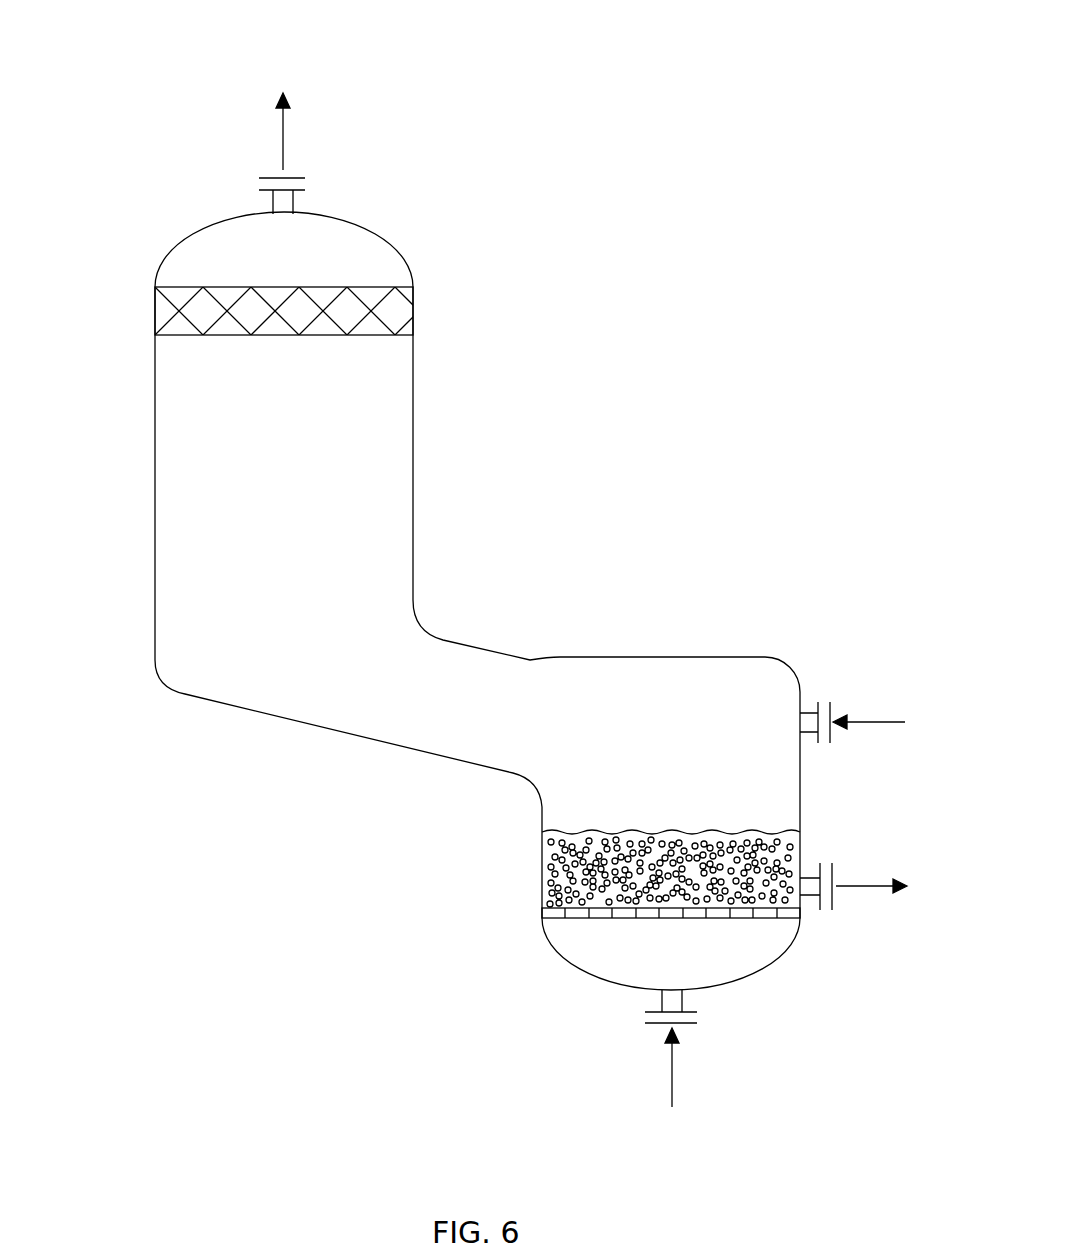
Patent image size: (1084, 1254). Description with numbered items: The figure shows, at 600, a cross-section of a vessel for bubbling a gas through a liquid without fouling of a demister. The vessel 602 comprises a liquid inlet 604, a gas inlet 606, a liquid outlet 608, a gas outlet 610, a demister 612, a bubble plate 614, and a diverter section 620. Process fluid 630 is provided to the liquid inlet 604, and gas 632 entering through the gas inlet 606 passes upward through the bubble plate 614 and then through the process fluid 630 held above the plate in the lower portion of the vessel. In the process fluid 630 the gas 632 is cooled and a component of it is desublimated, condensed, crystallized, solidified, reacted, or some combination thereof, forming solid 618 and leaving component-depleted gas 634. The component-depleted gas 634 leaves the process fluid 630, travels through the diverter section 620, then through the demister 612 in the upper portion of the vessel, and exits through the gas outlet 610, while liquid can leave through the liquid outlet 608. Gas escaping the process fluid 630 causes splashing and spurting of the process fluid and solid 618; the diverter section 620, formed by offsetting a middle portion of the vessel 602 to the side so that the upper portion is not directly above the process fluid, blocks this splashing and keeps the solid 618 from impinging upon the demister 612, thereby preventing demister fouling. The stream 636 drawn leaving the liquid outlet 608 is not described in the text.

The cross-section of a vessel for bubbling a gas through a liquid 600 is at (153, 76).
The vessel 602 is at (170, 252).
The liquid inlet 604 is at (805, 700).
The gas inlet 606 is at (683, 1000).
The liquid outlet 608 is at (803, 896).
The gas outlet 610 is at (294, 200).
The demister 612 is at (153, 312).
The bubble plate 614 is at (545, 912).
The solid 618 is at (800, 850).
The diverter section 620 is at (490, 640).
The process fluid 630 is at (460, 857).
The gas 632 is at (671, 1084).
The component-depleted gas 634 is at (284, 116).
The liquid outlet stream 636 is at (900, 886).